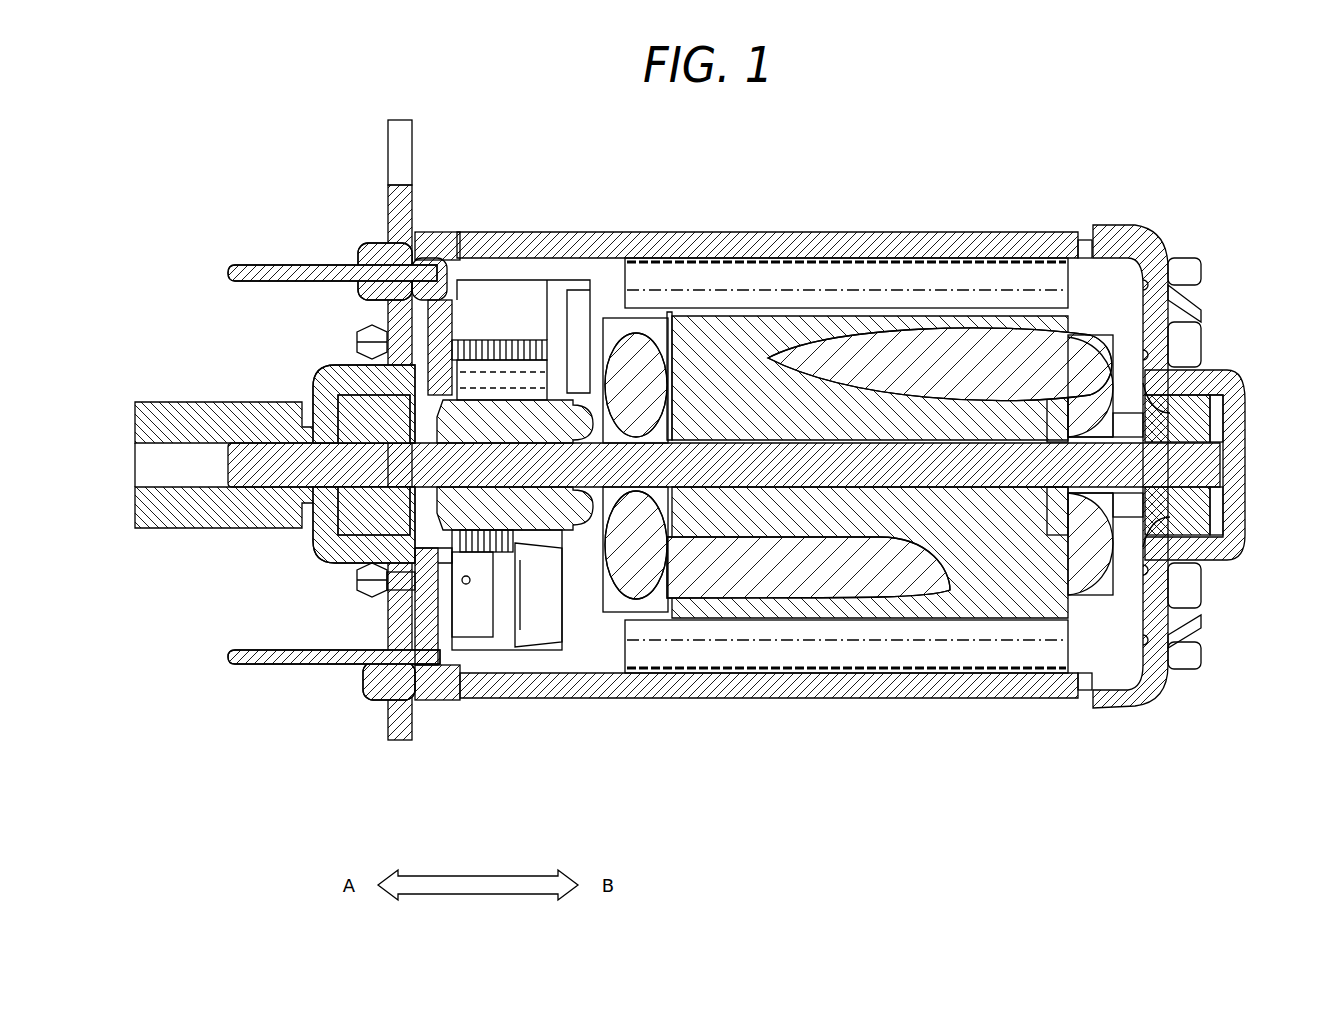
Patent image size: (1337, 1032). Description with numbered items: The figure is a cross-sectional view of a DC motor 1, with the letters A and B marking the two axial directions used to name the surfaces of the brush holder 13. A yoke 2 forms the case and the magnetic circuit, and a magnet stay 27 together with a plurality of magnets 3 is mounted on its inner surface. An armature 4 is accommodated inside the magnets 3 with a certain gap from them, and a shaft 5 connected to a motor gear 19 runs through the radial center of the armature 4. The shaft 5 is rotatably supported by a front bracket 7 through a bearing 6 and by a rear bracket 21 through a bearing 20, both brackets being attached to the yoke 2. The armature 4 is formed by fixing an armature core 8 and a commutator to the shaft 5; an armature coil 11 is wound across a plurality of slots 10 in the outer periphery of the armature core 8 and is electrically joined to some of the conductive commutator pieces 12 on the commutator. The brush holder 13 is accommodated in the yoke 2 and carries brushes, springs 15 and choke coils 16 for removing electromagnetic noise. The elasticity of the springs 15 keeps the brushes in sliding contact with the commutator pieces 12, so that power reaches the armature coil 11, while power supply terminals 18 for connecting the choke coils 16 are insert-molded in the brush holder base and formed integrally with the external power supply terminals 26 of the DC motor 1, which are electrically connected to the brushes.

The DC motor 1 is at (262, 135).
The yoke 2 is at (955, 256).
The magnets 3 is at (847, 462).
The armature 4 is at (730, 320).
The shaft 5 is at (1240, 462).
The bearing 6 is at (330, 380).
The front bracket 7 is at (388, 205).
The armature core 8 is at (990, 600).
The slots 10 is at (723, 598).
The armature coil 11 is at (630, 567).
The commutator pieces 12 is at (405, 500).
The brush holder 13 is at (440, 240).
The springs 15 is at (503, 612).
The choke coils 16 is at (555, 390).
The power supply terminals 18 is at (365, 583).
The motor gear 19 is at (182, 402).
The bearing 20 is at (1208, 372).
The rear bracket 21 is at (1135, 228).
The external power supply terminals 26 is at (275, 266).
The magnet stay 27 is at (782, 257).